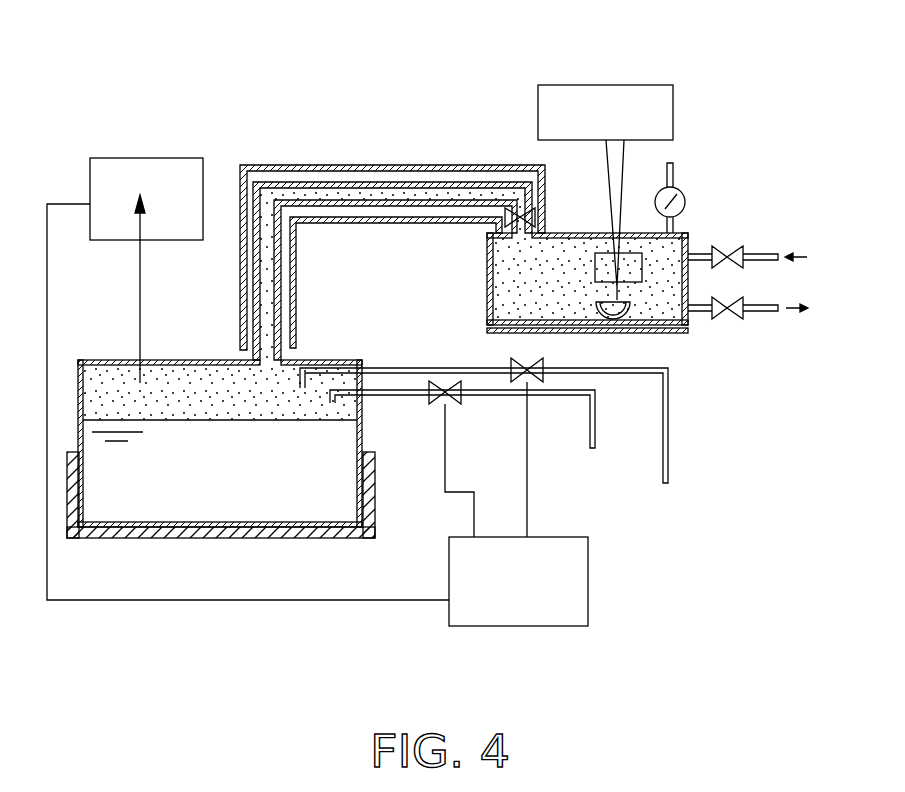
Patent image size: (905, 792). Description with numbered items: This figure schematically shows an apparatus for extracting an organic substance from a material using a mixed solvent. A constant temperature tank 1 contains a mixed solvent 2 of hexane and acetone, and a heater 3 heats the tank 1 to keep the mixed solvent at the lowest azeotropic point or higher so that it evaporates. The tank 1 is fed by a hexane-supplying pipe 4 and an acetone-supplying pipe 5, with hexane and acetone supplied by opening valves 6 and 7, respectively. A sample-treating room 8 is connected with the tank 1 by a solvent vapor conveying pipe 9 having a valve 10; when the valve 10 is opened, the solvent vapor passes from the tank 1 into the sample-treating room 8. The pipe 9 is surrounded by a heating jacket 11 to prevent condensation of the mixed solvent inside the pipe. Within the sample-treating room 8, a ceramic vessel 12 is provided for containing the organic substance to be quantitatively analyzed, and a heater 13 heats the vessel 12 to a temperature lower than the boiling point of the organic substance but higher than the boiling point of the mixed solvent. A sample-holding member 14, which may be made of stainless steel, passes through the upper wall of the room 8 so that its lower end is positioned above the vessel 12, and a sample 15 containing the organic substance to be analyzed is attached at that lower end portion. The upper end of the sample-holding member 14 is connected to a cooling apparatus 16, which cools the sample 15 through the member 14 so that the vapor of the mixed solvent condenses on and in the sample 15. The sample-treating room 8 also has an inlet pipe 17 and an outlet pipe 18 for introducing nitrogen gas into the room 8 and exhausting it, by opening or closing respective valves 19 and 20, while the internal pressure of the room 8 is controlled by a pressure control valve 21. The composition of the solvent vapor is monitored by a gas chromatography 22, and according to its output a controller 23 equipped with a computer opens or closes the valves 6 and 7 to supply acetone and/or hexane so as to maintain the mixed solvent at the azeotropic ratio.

The constant temperature tank 1 is at (82, 396).
The mixed solvent 2 is at (262, 513).
The heater 3 is at (182, 538).
The hexane-supplying pipe 4 is at (400, 367).
The acetone-supplying pipe 5 is at (408, 396).
The valve 6 is at (538, 366).
The valve 7 is at (452, 405).
The sample-treating room 8 is at (487, 268).
The solvent vapor conveying pipe 9 is at (423, 182).
The valve 10 is at (536, 217).
The heating jacket 11 is at (352, 165).
The ceramic vessel 12 is at (600, 325).
The heater 13 is at (666, 335).
The sample-holding member 14 is at (615, 172).
The sample 15 is at (627, 253).
The cooling apparatus 16 is at (673, 97).
The inlet pipe 17 is at (774, 253).
The outlet pipe 18 is at (771, 312).
The valve 19 is at (738, 248).
The valve 20 is at (738, 320).
The pressure control valve 21 is at (684, 196).
The gas chromatography 22 is at (161, 158).
The controller 23 is at (588, 578).